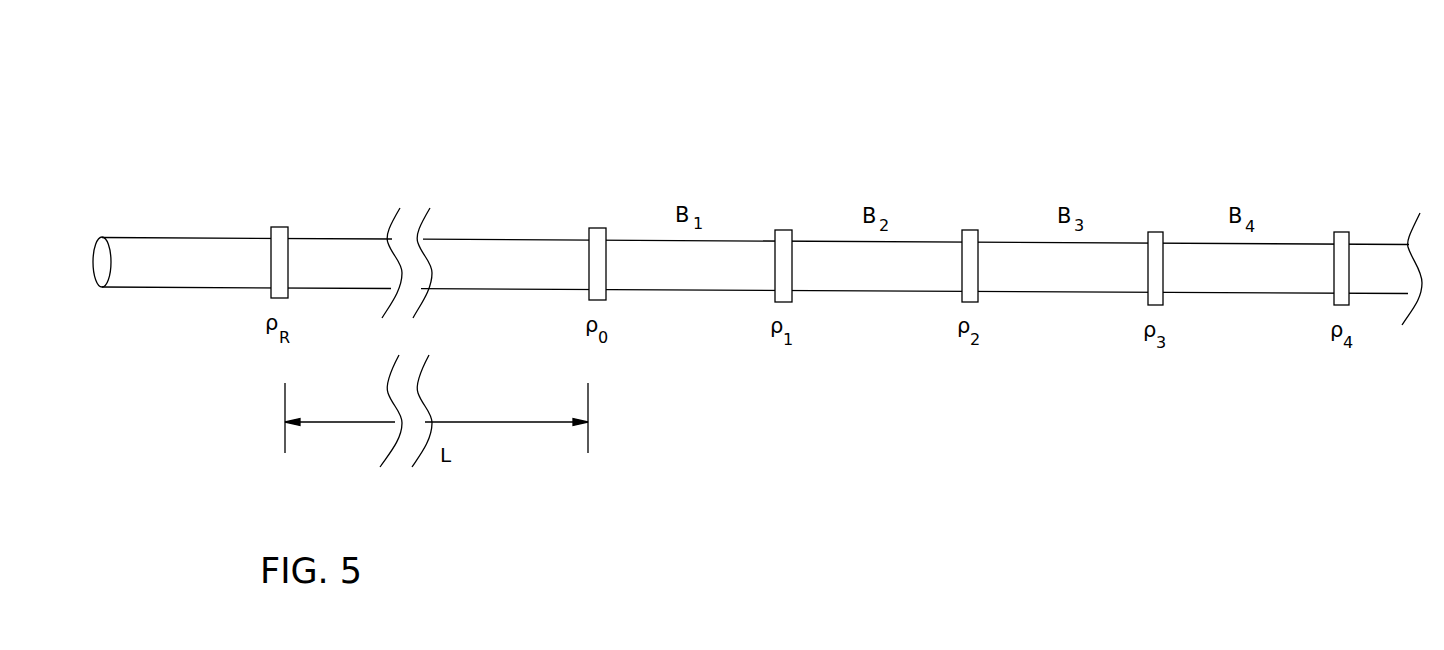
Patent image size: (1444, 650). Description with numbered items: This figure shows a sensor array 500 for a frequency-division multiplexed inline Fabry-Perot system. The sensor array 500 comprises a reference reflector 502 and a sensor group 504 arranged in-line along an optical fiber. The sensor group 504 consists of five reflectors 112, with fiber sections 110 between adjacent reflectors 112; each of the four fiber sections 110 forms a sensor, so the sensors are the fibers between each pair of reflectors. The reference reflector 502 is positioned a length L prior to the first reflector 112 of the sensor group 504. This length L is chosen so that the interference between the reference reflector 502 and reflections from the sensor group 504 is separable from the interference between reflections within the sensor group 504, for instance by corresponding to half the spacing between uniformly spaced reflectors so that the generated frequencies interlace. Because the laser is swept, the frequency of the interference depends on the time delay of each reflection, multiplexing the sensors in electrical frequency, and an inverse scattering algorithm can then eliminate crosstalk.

The sensor array 500 is at (600, 33).
The reference reflector 502 is at (288, 227).
The sensor group 504 is at (1074, 124).
The fiber sections 110 is at (640, 290).
The reflectors 112 is at (600, 228).